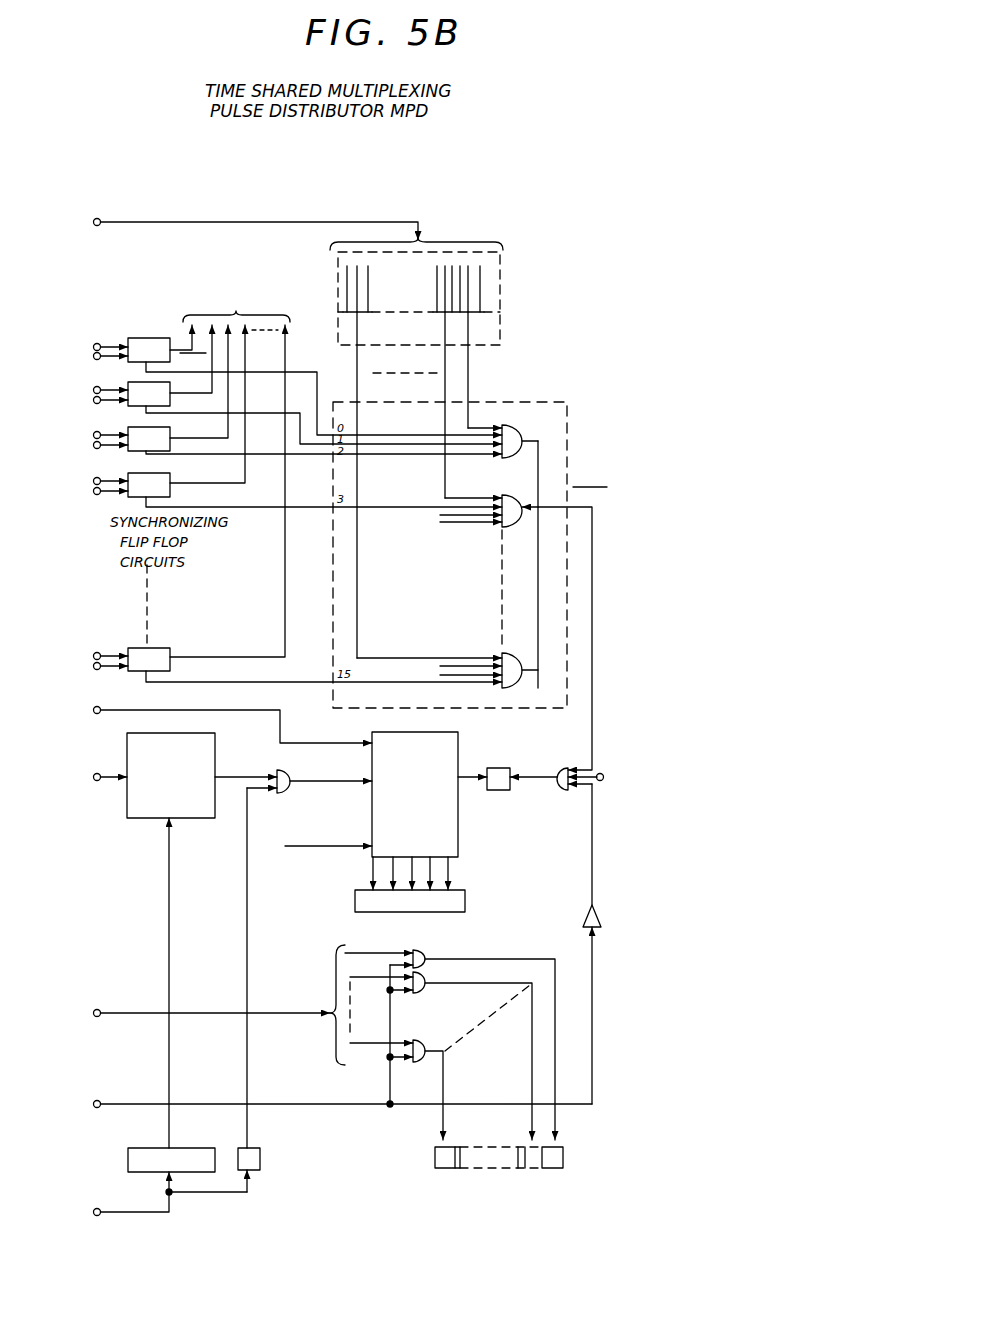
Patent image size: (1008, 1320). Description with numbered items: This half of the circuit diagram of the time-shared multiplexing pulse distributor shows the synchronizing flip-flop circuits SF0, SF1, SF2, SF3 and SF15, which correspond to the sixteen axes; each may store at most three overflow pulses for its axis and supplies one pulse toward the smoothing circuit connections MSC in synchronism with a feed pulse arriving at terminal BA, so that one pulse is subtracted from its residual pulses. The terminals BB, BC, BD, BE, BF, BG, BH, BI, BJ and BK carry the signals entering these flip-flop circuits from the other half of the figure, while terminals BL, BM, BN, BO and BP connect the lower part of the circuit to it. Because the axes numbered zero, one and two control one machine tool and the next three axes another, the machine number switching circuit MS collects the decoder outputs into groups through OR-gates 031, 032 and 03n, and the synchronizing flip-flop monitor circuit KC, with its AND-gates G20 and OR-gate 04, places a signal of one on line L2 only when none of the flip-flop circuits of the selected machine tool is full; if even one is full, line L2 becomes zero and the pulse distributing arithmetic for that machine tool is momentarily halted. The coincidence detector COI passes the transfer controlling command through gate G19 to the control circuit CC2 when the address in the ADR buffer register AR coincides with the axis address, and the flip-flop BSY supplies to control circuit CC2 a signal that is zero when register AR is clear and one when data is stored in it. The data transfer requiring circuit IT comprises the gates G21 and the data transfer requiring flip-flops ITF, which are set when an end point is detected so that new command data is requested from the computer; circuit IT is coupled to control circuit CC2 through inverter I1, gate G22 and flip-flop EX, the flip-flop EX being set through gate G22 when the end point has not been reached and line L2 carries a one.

The feed pulse input terminal BA is at (238, 239).
The input terminal BB is at (93, 343).
The input terminal BC is at (93, 357).
The input terminal BD is at (93, 385).
The input terminal BE is at (93, 401).
The input terminal BF is at (93, 435).
The input terminal BG is at (93, 446).
The input terminal BH is at (93, 481).
The input terminal BI is at (93, 492).
The input terminal BJ is at (93, 656).
The input terminal BK is at (93, 667).
The input terminal BL is at (215, 722).
The input terminal BM is at (92, 777).
The input terminal BN is at (194, 1013).
The input terminal BO is at (325, 1104).
The input terminal BP is at (113, 1206).
The synchronizing flip-flop circuit SF0 is at (315, 380).
The synchronizing flip-flop circuit SF1 is at (315, 384).
The synchronizing flip-flop circuit SF2 is at (315, 389).
The synchronizing flip-flop circuit SF3 is at (315, 416).
The synchronizing flip-flop circuit SF15 is at (315, 503).
The smoothing circuit connections MSC is at (229, 304).
The machine number switching circuit MS is at (500, 278).
The OR-gate 03n is at (370, 312).
The OR-gate 032 is at (447, 315).
The OR-gate 031 is at (483, 314).
The synchronizing flip-flop monitor circuit KC is at (567, 402).
The AND-gate G20 is at (512, 422).
The OR-gate 04 is at (538, 584).
The line L2 is at (592, 539).
The coincidence detector COI is at (258, 733).
The gate G19 is at (284, 768).
The control circuit CC2 is at (433, 818).
The flip-flop EX is at (465, 806).
The gate G22 is at (575, 767).
The gates G21 is at (460, 896).
The data transfer requiring circuit IT is at (470, 1006).
The inverter I1 is at (598, 916).
The ADR-buffer-register AR is at (183, 1160).
The flip-flop BSY' BSY is at (248, 1153).
The flip flop for requiring new command data ITF is at (488, 1170).